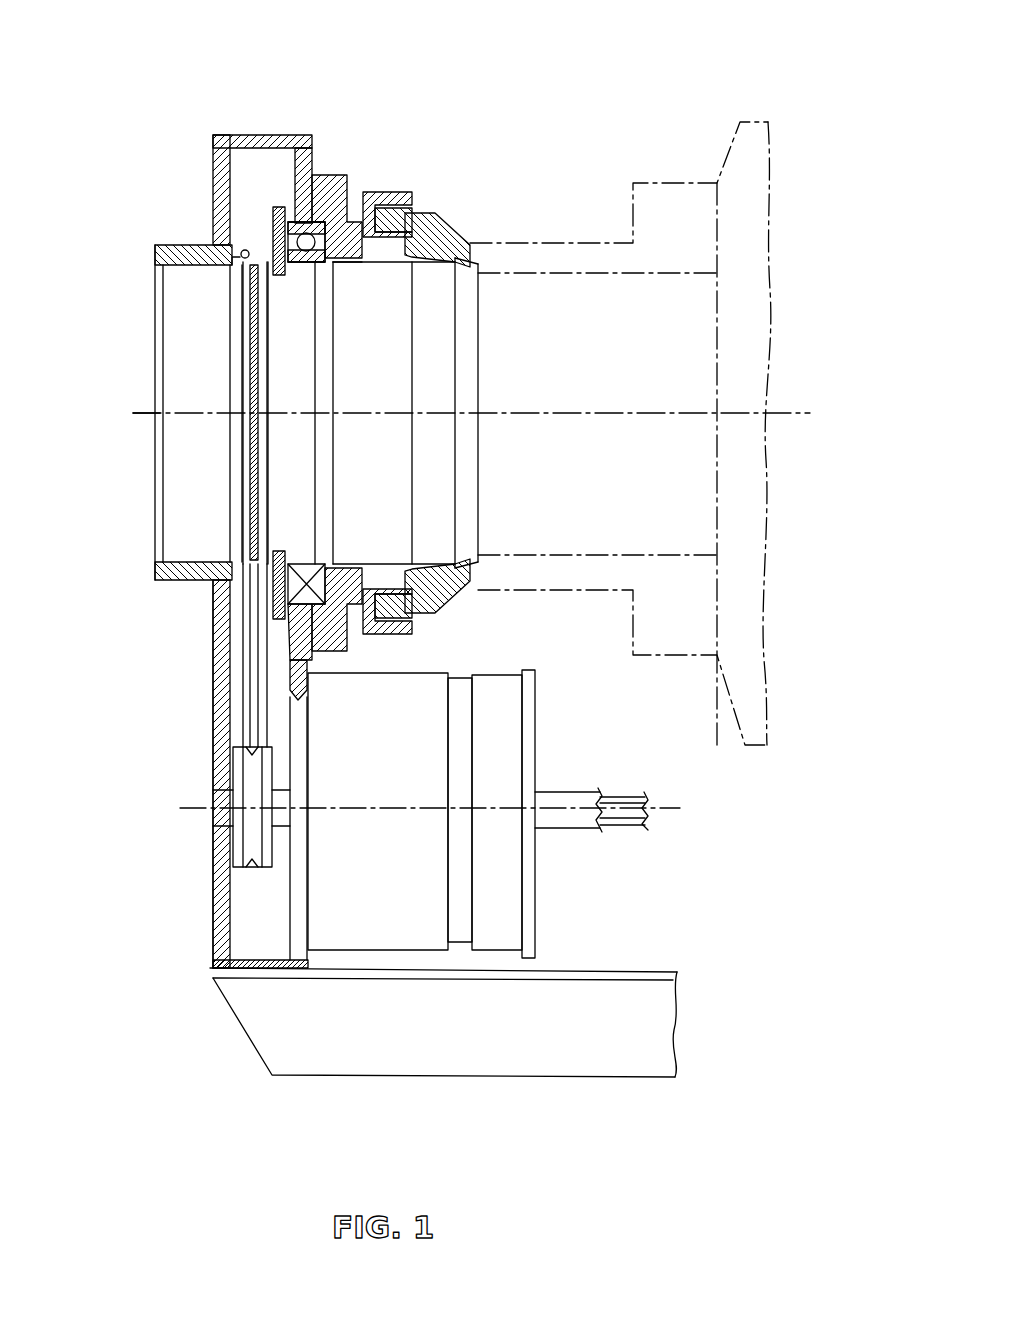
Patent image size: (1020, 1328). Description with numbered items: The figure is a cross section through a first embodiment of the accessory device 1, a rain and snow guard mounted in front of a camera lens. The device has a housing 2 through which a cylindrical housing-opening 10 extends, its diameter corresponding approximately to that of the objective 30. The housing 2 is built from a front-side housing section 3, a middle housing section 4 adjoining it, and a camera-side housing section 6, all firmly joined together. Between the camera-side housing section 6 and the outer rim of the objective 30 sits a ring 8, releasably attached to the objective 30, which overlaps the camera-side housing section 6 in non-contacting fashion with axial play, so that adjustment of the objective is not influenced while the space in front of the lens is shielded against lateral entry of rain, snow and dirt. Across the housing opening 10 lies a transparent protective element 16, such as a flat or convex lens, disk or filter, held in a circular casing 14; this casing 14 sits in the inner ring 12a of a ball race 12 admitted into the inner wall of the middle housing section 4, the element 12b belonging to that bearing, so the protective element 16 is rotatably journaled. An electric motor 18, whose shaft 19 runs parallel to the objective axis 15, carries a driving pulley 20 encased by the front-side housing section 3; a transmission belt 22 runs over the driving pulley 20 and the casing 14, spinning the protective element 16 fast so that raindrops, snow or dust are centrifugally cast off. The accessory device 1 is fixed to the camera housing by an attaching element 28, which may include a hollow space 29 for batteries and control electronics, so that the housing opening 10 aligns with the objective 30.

The accessory device 1 is at (412, 95).
The housing 2 is at (180, 622).
The front-side housing section 3 is at (220, 158).
The middle housing section 4 is at (348, 178).
The camera-side housing section 6 is at (405, 193).
The ring 8 is at (436, 214).
The housing-opening 10 is at (210, 391).
The ball race 12 is at (305, 225).
The inner ring 12a is at (340, 268).
The bearing outer race 12b is at (330, 255).
The casing 14 is at (280, 212).
The objective axis 15 is at (140, 413).
The transparent protective element 16 is at (250, 340).
The electric motor 18 is at (383, 875).
The shaft 19 is at (580, 790).
The driving pulley 20 is at (238, 830).
The transmission belt 22 is at (248, 690).
The attaching element 28 is at (594, 970).
The hollow space 29 is at (526, 1033).
The objective 30 is at (662, 200).